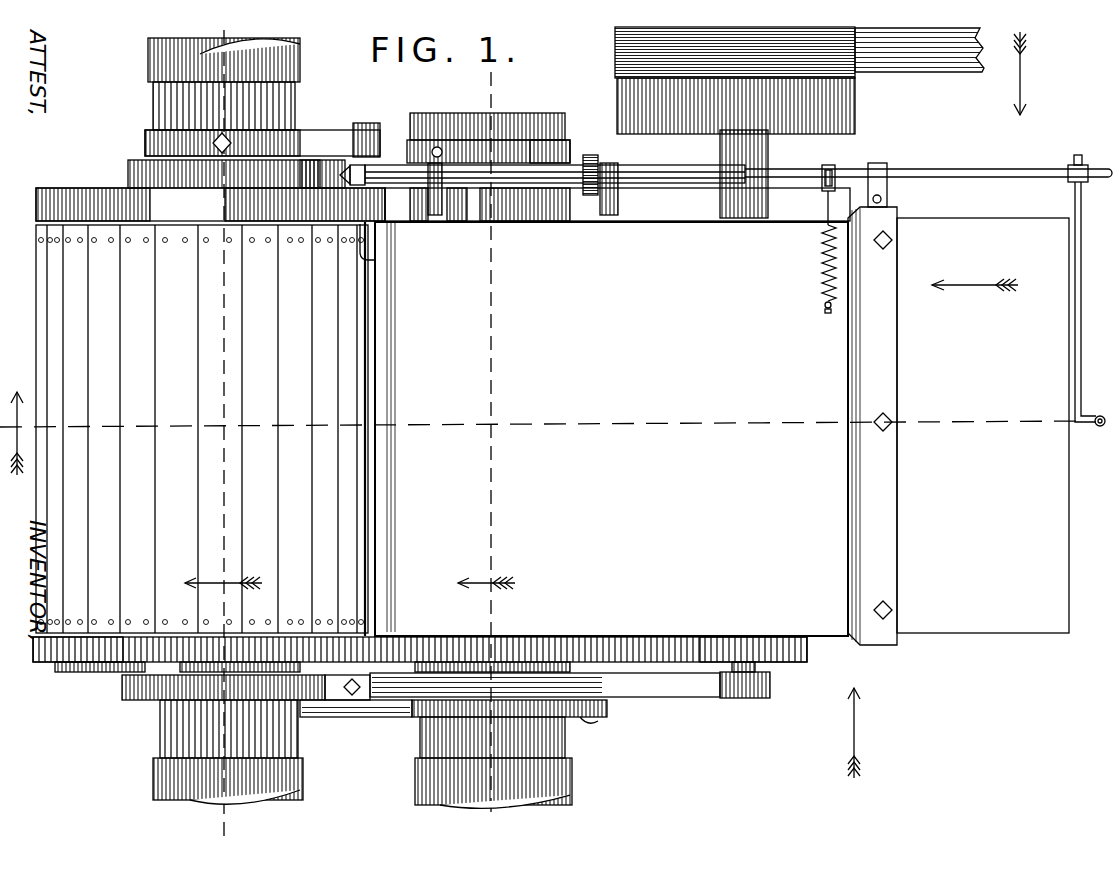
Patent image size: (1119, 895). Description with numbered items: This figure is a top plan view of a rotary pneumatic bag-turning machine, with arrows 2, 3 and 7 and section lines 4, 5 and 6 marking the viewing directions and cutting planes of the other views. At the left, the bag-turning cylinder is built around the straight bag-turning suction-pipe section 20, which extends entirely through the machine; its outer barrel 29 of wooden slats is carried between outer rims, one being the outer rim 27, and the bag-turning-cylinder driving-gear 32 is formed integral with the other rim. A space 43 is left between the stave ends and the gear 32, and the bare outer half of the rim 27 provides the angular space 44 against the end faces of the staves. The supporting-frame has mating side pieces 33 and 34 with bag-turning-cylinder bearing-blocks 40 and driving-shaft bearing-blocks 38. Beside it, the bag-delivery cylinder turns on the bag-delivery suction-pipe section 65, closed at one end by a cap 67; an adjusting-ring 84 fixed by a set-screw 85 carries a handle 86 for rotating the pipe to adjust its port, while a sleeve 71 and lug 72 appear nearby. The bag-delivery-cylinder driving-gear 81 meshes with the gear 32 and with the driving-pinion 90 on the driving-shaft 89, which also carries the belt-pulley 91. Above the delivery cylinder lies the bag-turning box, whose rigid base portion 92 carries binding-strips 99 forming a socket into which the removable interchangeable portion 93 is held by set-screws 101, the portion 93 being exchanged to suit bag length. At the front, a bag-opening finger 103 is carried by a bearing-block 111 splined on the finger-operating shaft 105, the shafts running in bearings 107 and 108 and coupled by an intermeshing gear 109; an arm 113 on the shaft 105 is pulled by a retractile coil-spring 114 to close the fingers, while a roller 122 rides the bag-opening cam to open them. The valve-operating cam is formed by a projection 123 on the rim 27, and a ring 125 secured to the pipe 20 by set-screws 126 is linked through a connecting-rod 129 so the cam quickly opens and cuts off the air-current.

The arrow 2 is at (863, 733).
The arrow 3 is at (1028, 73).
The line 4 4 is at (1098, 403).
The line 5 5 is at (225, 426).
The line 6 6 is at (493, 451).
The arrow 7 is at (975, 287).
The bag-turning suction-pipe section 20 is at (140, 744).
The outer rim 27 is at (210, 204).
The outer barrel 29 is at (202, 429).
The bag-turning-cylinder driving-gear 32 is at (45, 668).
The side piece 33 is at (698, 698).
The side piece 34 is at (648, 168).
The driving-shaft bearing-blocks 38 is at (766, 172).
The bag-turning-cylinder bearing-blocks 40 is at (303, 160).
The space 43 is at (95, 668).
The angular space 44 is at (180, 232).
The bag-delivery suction-pipe section 65 is at (462, 135).
The cap 67 is at (518, 138).
The sleeve 71 is at (420, 712).
The lug 72 is at (592, 722).
The bag-delivery-cylinder driving-gear 81 is at (557, 650).
The adjusting-ring 84 is at (548, 150).
The set-screw 85 is at (432, 150).
The handle 86 is at (592, 155).
The driving-shaft 89 is at (758, 668).
The driving-pinion 90 is at (765, 650).
The belt-pulley 91 is at (857, 102).
The base portion 92 is at (611, 429).
The removable interchangeable portion 93 is at (983, 425).
The binding-strips 99 is at (890, 324).
The set-screws 101 is at (898, 240).
The bag-opening finger 103 is at (1098, 427).
The finger-operating shaft 105 is at (958, 163).
The bearing 107 is at (880, 162).
The bearing 108 is at (620, 200).
The intermeshing gear 109 is at (592, 196).
The bearing-block 111 is at (1070, 180).
The arm 113 is at (828, 168).
The retractile coil-spring 114 is at (820, 268).
The roller 122 is at (375, 240).
The projection 123 is at (42, 196).
The ring 125 is at (146, 138).
The set-screws 126 is at (230, 140).
The connecting-rod 129 is at (362, 123).